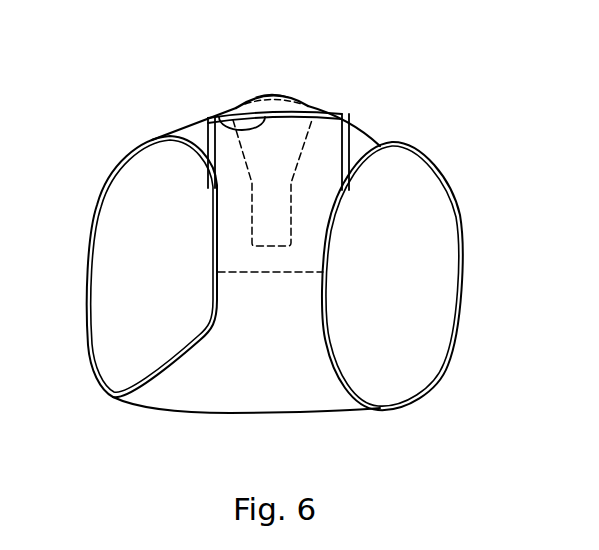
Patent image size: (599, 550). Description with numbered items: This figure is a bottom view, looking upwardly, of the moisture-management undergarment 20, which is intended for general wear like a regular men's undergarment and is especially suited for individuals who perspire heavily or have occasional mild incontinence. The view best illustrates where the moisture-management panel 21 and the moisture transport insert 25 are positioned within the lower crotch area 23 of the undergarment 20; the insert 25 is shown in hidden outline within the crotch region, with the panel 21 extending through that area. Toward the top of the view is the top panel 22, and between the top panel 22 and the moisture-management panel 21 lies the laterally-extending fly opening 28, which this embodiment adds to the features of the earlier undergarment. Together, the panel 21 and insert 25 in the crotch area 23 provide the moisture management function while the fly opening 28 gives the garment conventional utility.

The undergarment 20 is at (483, 107).
The moisture-management panel 21 is at (217, 114).
The top panel 22 is at (301, 98).
The lower crotch area 23 is at (268, 272).
The moisture transport insert 25 is at (272, 201).
The fly opening 28 is at (263, 99).